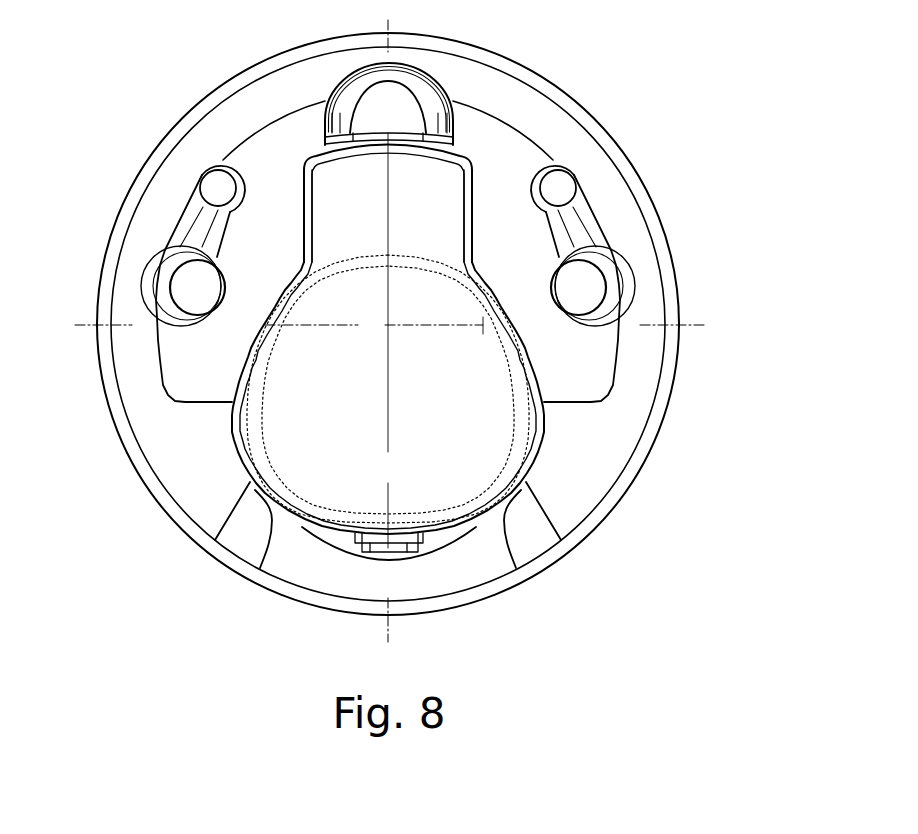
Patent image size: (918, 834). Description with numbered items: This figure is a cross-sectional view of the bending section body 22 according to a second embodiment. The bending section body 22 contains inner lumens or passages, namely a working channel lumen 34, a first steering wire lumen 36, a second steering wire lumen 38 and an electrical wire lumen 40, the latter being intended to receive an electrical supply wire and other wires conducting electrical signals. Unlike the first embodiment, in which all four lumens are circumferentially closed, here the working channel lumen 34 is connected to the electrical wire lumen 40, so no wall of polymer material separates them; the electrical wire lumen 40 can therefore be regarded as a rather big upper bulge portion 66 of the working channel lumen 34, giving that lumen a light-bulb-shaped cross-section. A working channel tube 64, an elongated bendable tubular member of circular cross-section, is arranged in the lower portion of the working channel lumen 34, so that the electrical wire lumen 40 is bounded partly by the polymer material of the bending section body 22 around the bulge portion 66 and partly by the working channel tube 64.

The bending section body 22 is at (652, 182).
The working channel lumen 34 is at (465, 441).
The first steering wire lumen 36 is at (188, 290).
The second steering wire lumen 38 is at (578, 284).
The electrical wire lumen 40 is at (440, 177).
The working channel tube 64 is at (522, 423).
The bulge portion 66 is at (330, 180).